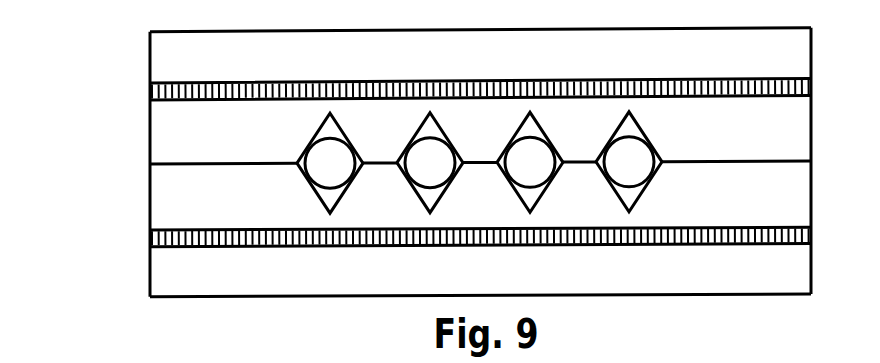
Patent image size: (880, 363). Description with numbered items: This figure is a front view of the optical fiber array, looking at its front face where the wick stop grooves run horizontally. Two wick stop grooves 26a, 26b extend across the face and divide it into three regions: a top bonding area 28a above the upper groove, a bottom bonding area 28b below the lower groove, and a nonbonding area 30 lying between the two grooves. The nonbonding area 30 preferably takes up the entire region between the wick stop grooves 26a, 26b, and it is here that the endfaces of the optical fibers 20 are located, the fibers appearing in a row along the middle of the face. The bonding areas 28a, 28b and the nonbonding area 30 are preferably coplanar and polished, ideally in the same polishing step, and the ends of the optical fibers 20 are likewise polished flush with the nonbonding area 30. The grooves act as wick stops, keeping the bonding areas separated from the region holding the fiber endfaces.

The optical fiber 20 is at (628, 162).
The wick stop groove 26a is at (150, 92).
The wick stop groove 26b is at (150, 239).
The top bonding area 28a is at (450, 66).
The bottom bonding area 28b is at (504, 282).
The nonbonding area 30 is at (218, 150).